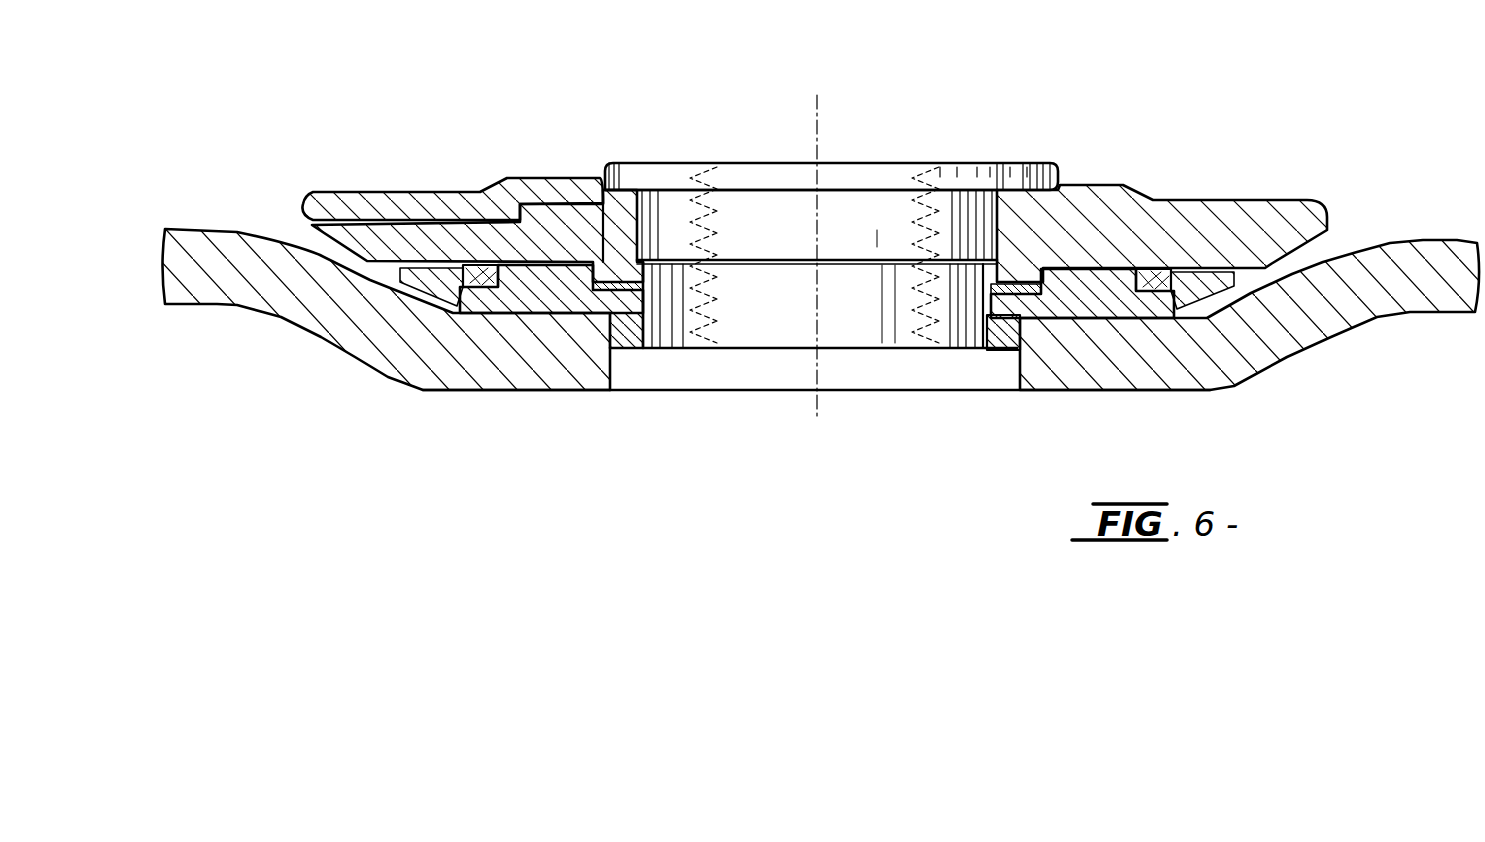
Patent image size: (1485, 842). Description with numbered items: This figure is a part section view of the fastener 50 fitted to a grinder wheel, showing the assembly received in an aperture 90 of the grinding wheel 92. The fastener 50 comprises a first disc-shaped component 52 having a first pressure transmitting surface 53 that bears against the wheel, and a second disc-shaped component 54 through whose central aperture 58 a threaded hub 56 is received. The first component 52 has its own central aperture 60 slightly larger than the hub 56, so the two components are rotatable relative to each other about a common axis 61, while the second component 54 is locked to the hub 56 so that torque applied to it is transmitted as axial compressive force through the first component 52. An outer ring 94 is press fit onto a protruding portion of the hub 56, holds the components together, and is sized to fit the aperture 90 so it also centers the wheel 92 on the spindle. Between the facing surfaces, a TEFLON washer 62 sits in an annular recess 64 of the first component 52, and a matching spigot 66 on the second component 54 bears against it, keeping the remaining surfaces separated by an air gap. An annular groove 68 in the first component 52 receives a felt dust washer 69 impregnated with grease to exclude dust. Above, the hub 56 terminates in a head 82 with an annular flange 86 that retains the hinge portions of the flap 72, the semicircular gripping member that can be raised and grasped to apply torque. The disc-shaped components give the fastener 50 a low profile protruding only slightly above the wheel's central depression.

The fastener 50 is at (1264, 184).
The first disc-shaped component 52 is at (1132, 302).
The first pressure transmitting surface 53 is at (1062, 322).
The second disc-shaped component 54 is at (1128, 212).
The hub 56 is at (838, 322).
The central aperture 58 is at (663, 228).
The central aperture 60 is at (978, 290).
The common axis 61 is at (817, 122).
The TEFLON washer 62 is at (716, 292).
The annular recess 64 is at (600, 292).
The spigot 66 is at (573, 205).
The annular groove 68 is at (495, 290).
The felt dust washer 69 is at (458, 295).
The flap 72 is at (398, 205).
The head 82 is at (867, 162).
The annular flange 86 is at (1002, 175).
The aperture 90 is at (1023, 370).
The grinding wheel 92 is at (1372, 300).
The outer ring 94 is at (641, 345).